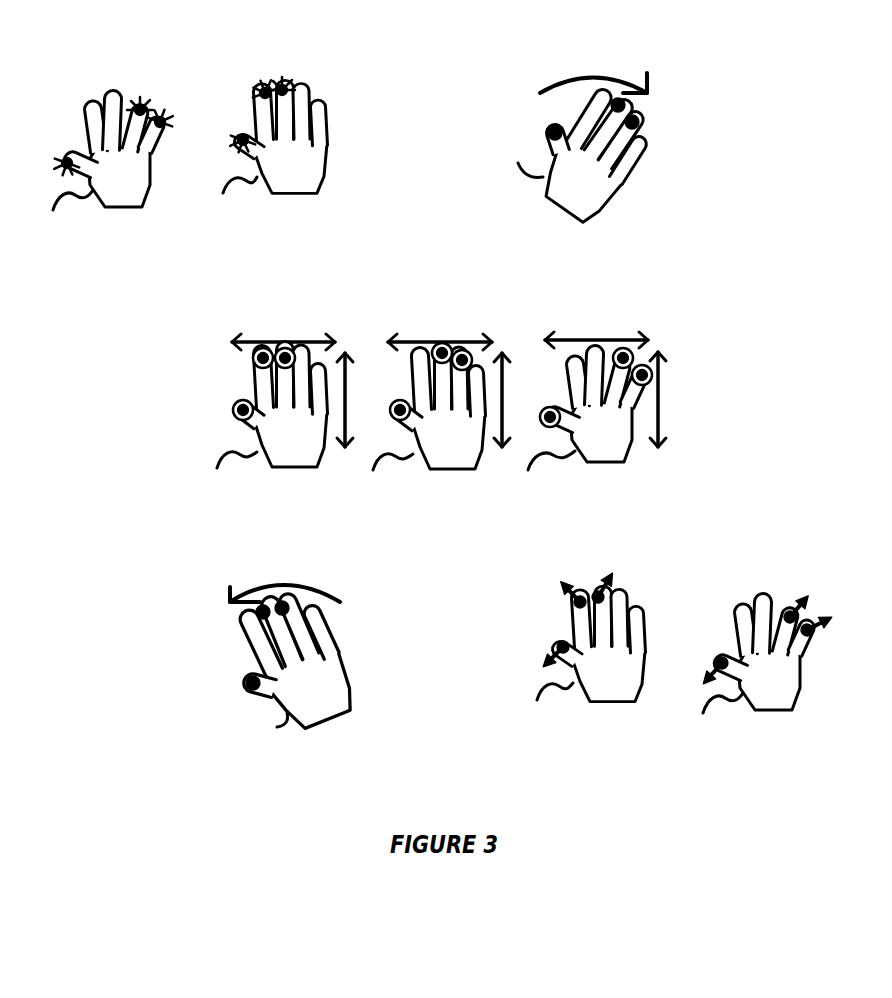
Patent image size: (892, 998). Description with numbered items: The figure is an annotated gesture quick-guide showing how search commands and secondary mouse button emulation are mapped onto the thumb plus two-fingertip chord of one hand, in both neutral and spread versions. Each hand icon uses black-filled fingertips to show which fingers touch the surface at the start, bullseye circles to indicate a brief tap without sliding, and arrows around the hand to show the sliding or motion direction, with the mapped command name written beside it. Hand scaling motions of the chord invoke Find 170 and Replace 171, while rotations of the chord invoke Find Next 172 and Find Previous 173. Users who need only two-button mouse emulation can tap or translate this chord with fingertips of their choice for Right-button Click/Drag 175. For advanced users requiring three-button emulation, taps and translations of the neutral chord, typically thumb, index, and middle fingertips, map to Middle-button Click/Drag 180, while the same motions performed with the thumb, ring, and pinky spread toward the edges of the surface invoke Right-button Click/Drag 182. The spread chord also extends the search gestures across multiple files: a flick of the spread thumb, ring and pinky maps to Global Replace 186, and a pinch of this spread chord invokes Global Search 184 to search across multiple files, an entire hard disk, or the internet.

The Global Search 184 is at (113, 134).
The Find 170 is at (275, 133).
The Find Next 172 is at (589, 131).
The Middle-button Click/Drag 180 is at (285, 388).
The Right-button Click/Drag 175 is at (441, 388).
The Right-button Click/Drag 182 is at (597, 387).
The Find Previous 173 is at (289, 643).
The Replace 171 is at (596, 639).
The Global Replace 186 is at (767, 637).